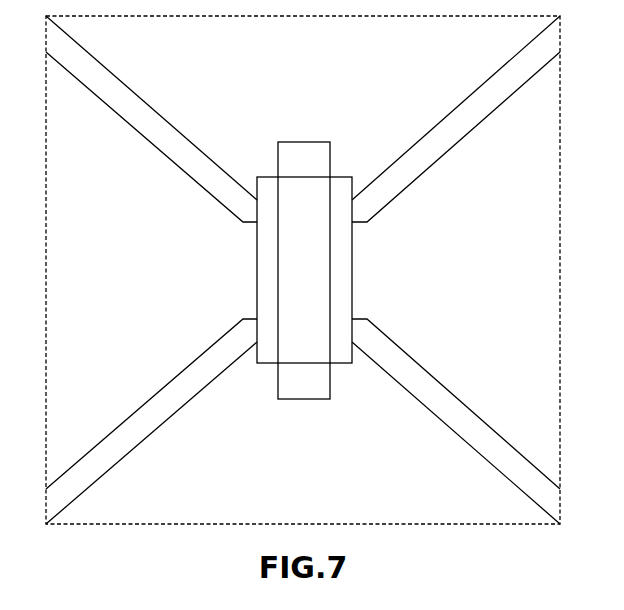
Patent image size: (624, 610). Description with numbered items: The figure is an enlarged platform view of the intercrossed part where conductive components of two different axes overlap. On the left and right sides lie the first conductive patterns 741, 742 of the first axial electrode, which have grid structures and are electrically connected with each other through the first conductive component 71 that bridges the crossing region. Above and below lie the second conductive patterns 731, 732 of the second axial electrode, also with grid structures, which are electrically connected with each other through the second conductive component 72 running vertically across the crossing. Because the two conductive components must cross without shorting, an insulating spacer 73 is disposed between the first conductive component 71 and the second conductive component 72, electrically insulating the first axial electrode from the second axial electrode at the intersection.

The first conductive component 71 is at (363, 272).
The second conductive component 72 is at (318, 152).
The insulating spacer 73 is at (260, 363).
The second conductive pattern 731 is at (276, 70).
The second conductive pattern 732 is at (277, 493).
The first conductive pattern 741 is at (128, 280).
The first conductive pattern 742 is at (535, 280).